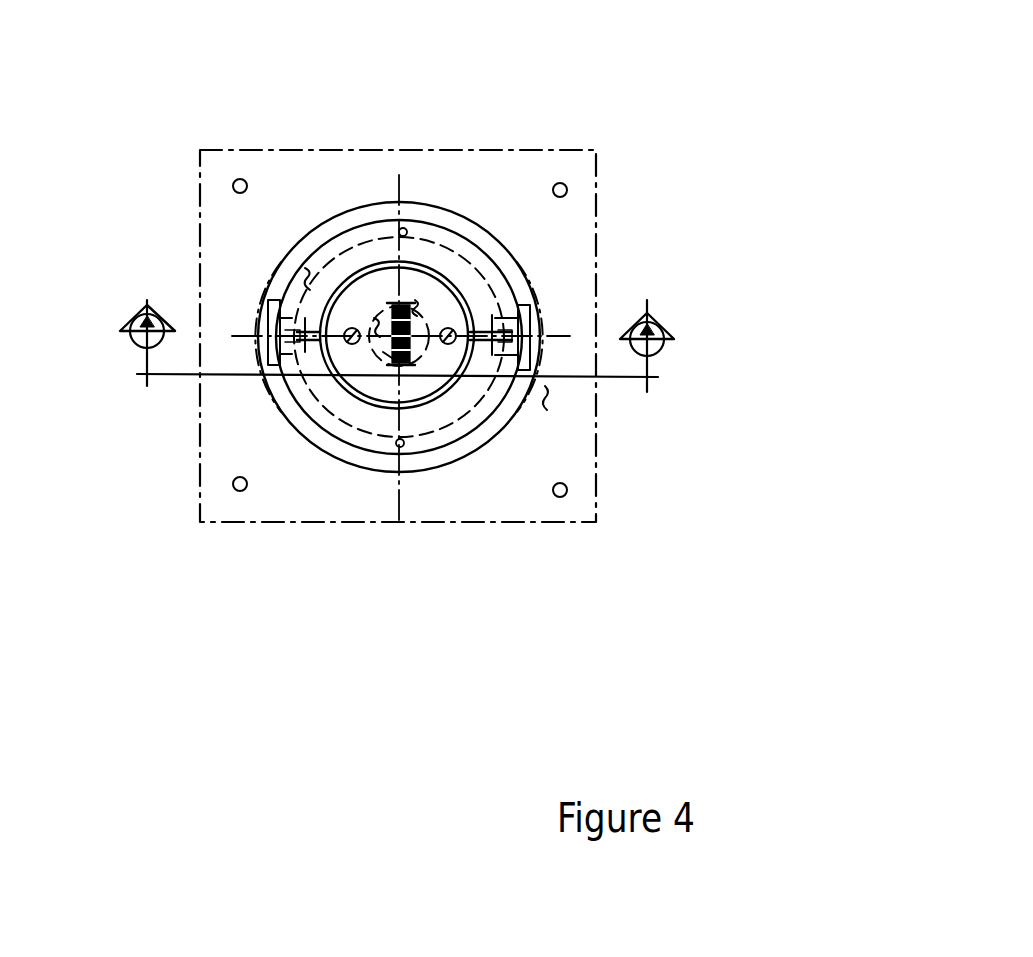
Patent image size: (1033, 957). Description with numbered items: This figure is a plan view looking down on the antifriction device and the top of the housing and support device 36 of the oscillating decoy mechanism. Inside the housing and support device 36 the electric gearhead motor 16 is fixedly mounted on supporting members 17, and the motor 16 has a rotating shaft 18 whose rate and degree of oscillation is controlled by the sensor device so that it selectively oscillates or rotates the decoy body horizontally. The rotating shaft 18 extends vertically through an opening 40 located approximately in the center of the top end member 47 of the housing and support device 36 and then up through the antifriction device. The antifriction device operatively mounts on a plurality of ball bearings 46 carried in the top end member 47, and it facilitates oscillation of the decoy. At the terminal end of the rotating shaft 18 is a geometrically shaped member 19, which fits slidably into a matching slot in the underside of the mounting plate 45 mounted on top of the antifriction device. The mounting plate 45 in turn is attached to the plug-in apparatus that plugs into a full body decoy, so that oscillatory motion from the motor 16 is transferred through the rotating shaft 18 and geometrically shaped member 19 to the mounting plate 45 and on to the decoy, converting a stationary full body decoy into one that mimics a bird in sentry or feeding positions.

The electric gearhead motor 16 is at (437, 294).
The supporting members 17 is at (470, 312).
The rotating shaft 18 is at (406, 310).
The geometrically shaped member 19 is at (388, 356).
The housing and support device 36 is at (500, 257).
The opening 40 is at (370, 318).
The mounting plate 45 is at (560, 406).
The ball bearings 46 is at (405, 222).
The top end member 47 is at (297, 278).